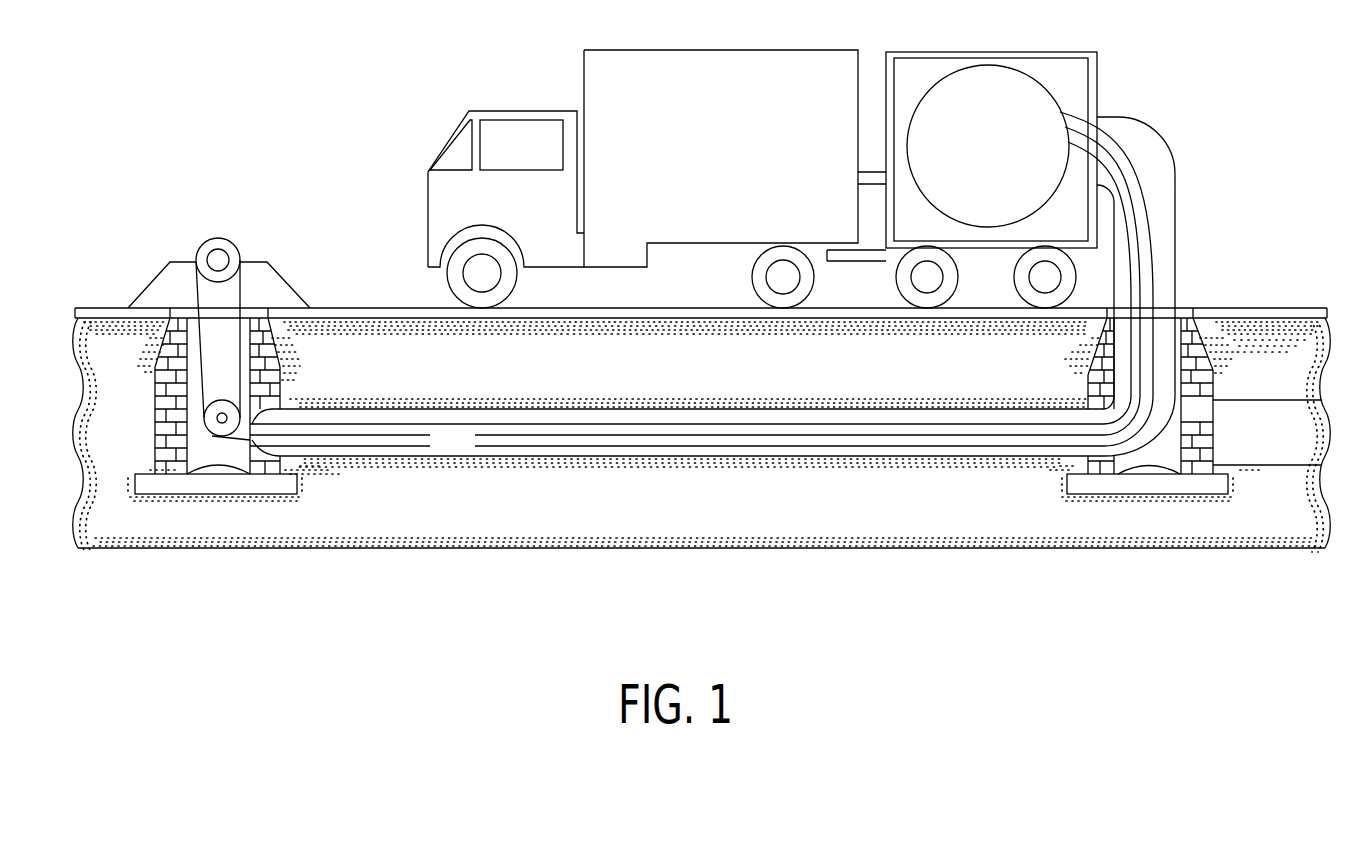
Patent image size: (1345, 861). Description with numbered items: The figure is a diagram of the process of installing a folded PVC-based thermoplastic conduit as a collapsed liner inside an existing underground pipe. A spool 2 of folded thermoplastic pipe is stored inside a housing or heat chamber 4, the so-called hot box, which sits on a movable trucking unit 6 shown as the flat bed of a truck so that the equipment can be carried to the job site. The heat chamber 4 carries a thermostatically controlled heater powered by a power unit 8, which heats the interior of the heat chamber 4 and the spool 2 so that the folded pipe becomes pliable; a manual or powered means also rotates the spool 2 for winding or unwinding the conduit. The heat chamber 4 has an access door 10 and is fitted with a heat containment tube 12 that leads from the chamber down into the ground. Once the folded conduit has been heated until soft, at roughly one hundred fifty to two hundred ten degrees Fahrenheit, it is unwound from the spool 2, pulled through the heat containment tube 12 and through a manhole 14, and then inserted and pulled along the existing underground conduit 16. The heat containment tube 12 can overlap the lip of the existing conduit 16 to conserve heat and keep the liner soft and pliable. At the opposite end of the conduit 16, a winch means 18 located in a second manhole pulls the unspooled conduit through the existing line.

The spool 2 is at (988, 146).
The heat chamber 4 is at (992, 283).
The movable trucking unit 6 is at (506, 189).
The power unit 8 is at (721, 158).
The access door 10 is at (1112, 128).
The heat containment tube 12 is at (1114, 279).
The manhole 14 is at (1147, 406).
The existing underground conduit 16 is at (677, 433).
The winch means 18 is at (232, 243).